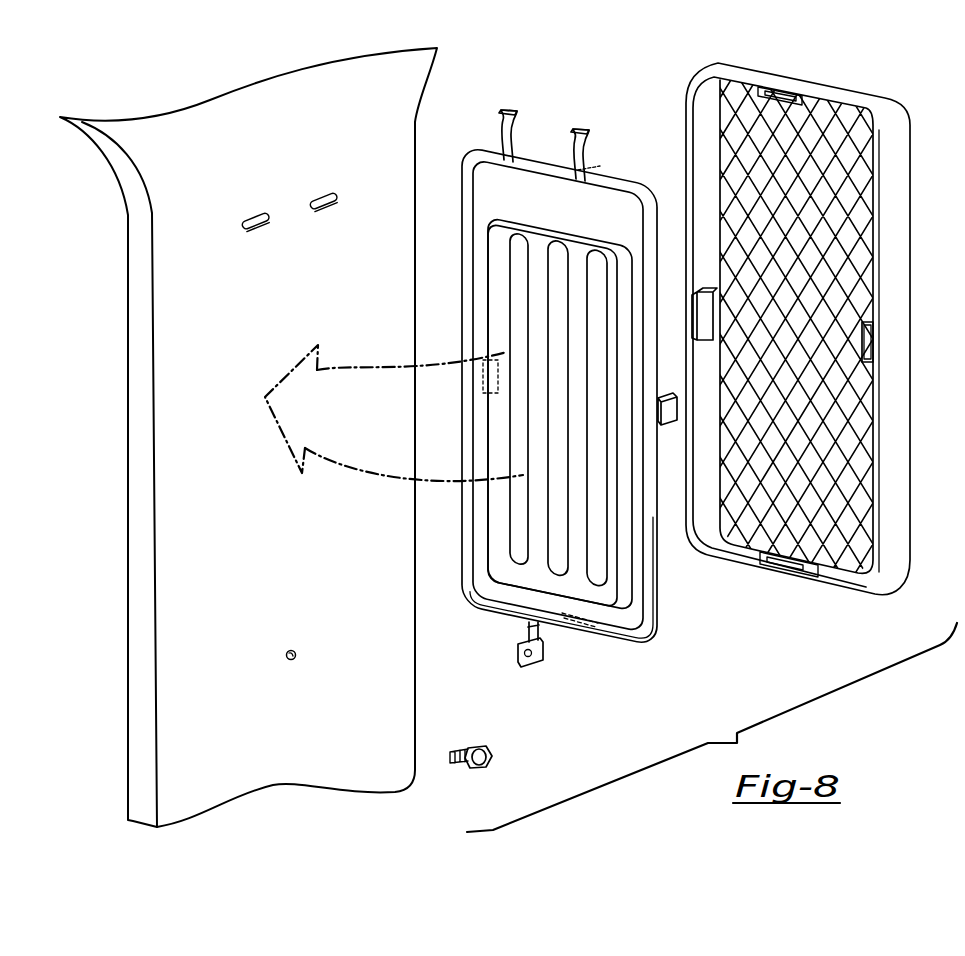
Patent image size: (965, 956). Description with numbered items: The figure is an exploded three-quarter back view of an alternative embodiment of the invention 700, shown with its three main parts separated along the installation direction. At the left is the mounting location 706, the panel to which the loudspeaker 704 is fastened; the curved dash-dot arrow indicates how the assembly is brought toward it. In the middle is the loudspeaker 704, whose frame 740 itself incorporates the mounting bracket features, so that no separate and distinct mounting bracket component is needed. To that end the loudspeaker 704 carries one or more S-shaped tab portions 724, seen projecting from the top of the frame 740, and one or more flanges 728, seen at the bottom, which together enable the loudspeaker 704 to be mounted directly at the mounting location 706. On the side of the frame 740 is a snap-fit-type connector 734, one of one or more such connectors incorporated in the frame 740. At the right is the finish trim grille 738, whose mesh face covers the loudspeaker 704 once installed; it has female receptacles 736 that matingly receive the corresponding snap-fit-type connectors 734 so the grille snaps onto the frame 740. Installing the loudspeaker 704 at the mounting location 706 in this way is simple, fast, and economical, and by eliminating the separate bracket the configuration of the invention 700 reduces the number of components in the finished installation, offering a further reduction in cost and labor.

The invention 700 is at (618, 112).
The loudspeaker 704 is at (457, 150).
The mounting location 706 is at (231, 116).
The S-shaped tab portion 724 is at (581, 118).
The flange 728 is at (523, 664).
The snap-fit-type connector 734 is at (668, 426).
The female receptacle 736 is at (863, 345).
The finish trim grille 738 is at (861, 90).
The frame 740 is at (632, 640).